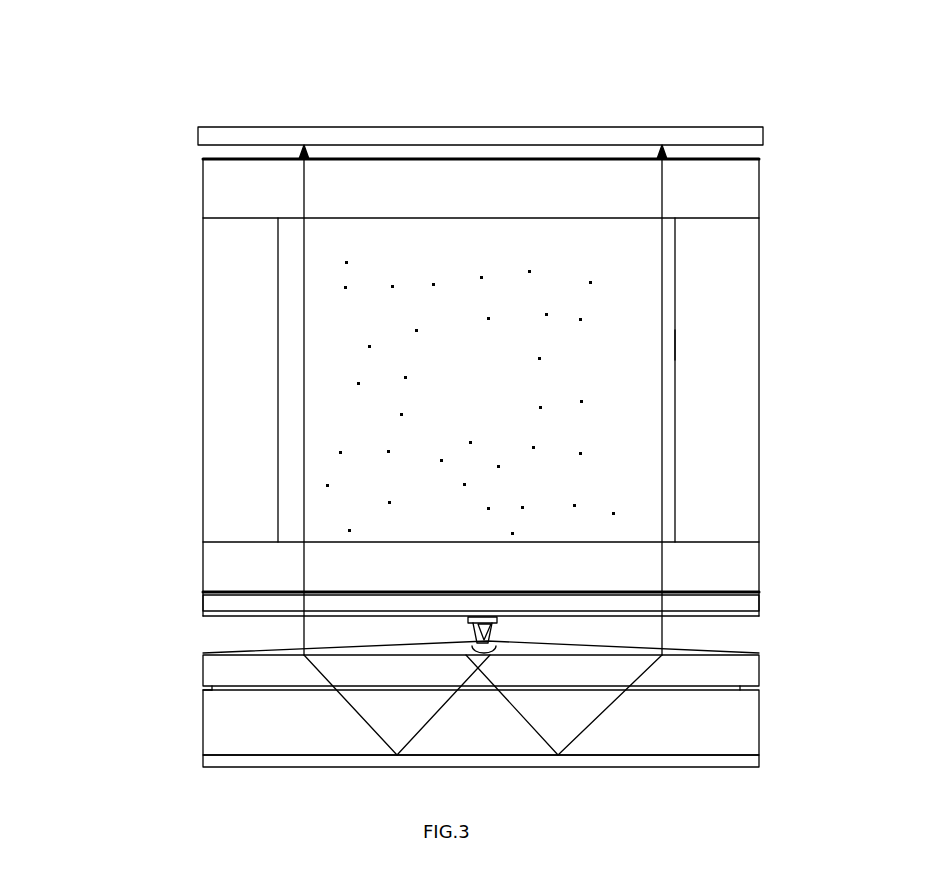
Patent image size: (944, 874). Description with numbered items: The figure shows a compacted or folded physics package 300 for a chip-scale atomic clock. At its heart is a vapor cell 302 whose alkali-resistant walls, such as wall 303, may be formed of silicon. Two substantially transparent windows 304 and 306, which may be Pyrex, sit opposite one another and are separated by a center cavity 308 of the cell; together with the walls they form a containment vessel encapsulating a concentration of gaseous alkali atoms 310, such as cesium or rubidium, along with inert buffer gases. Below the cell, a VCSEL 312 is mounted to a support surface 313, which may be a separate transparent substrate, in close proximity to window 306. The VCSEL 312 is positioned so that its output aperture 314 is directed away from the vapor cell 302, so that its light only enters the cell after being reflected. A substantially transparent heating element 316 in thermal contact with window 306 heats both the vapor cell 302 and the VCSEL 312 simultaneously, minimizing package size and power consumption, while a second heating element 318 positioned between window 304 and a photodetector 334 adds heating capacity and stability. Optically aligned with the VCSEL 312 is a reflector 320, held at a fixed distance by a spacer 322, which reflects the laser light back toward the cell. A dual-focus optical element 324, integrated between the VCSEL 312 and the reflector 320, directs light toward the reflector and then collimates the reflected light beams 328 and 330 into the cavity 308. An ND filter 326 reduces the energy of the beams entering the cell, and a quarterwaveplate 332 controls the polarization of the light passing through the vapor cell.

The physics package 300 is at (394, 302).
The vapor cell 302 is at (232, 366).
The wall 303 is at (740, 352).
The window 304 is at (488, 203).
The window 306 is at (483, 580).
The cavity 308 is at (584, 398).
The alkali atoms 310 is at (582, 401).
The VCSEL 312 is at (497, 618).
The support surface 313 is at (740, 614).
The output aperture 314 is at (480, 638).
The heating element 316 is at (250, 591).
The second heating element 318 is at (543, 159).
The reflector 320 is at (297, 770).
The spacer 322 is at (303, 730).
The dual-focus optical element 324 is at (717, 683).
The ND filter 326 is at (753, 688).
The light beam 328 is at (304, 235).
The light beam 330 is at (663, 235).
The quarterwaveplate 332 is at (207, 603).
The photodetector 334 is at (697, 138).